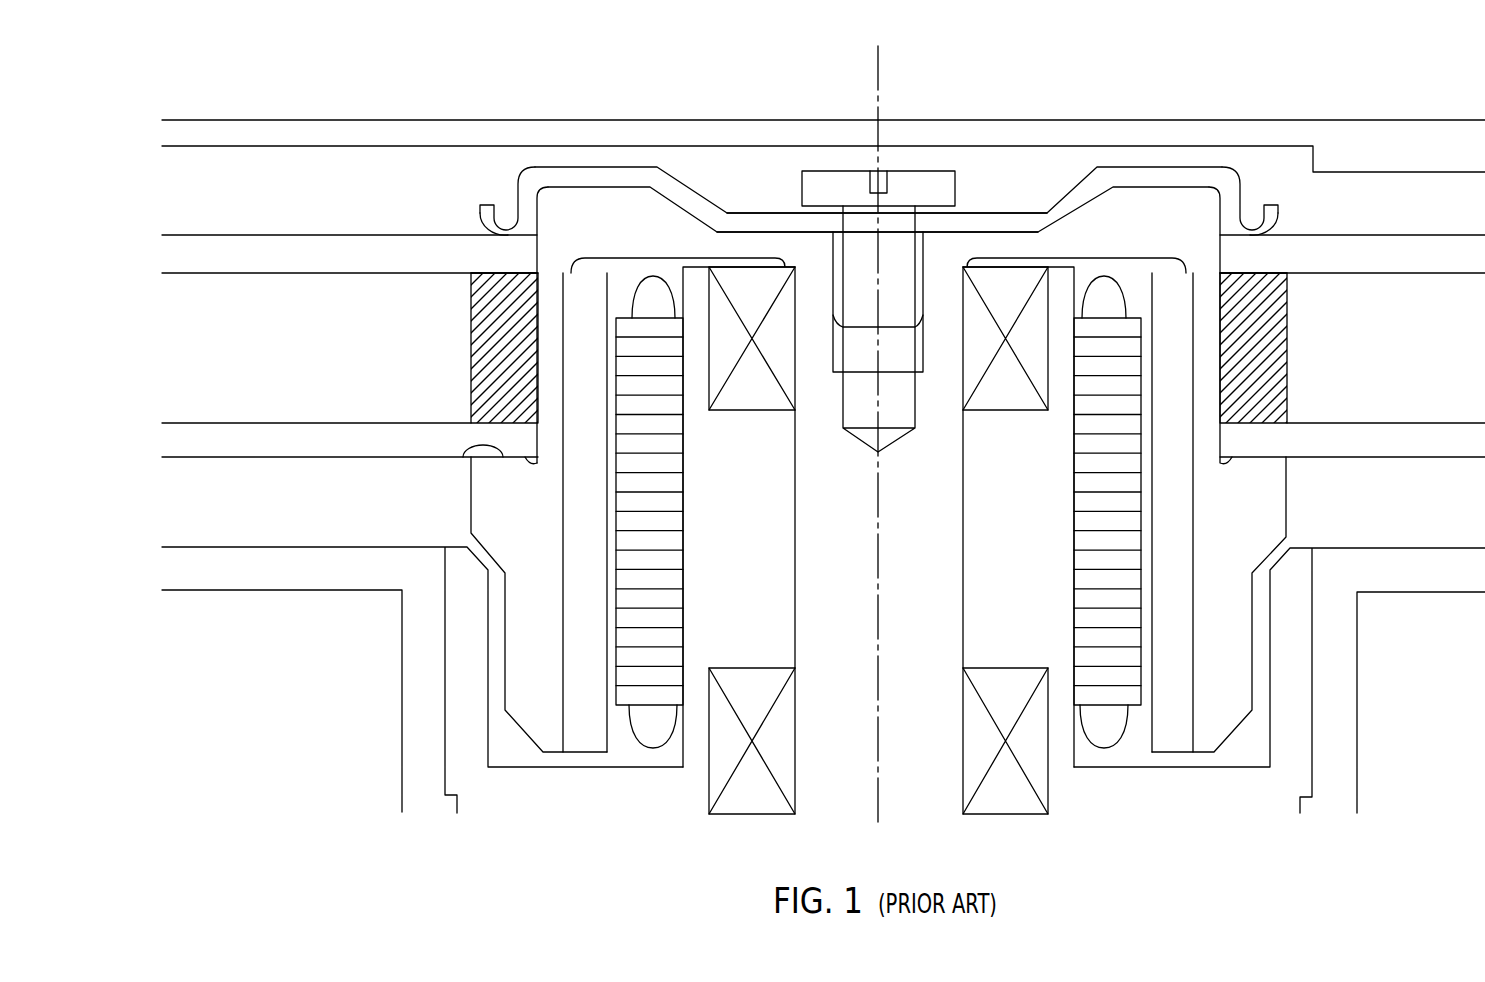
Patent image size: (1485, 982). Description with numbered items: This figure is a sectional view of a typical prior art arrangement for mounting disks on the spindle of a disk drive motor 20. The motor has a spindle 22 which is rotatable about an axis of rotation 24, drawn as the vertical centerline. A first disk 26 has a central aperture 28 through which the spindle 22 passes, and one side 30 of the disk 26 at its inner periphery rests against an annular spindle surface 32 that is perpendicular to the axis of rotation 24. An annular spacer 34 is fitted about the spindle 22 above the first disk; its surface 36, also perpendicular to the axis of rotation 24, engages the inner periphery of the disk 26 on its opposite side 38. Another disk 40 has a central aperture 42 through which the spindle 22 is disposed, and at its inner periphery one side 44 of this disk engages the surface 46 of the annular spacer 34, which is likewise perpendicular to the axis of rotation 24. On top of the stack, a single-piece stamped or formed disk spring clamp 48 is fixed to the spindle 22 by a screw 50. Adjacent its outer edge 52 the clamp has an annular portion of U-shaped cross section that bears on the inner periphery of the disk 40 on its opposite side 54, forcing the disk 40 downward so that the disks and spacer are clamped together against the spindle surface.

The disk drive motor 20 is at (978, 246).
The spindle 22 is at (633, 208).
The axis of rotation 24 is at (880, 67).
The first disk 26 is at (209, 452).
The central aperture 28 is at (539, 456).
The one side of the disk 30 is at (490, 458).
The annular spindle surface 32 is at (465, 458).
The annular spacer 34 is at (482, 334).
The surface of the annular spacer 36 is at (483, 424).
The opposite side of the disk 38 is at (504, 426).
The disk 40 is at (214, 263).
The central aperture 42 is at (538, 250).
The one side of the disk 44 is at (478, 280).
The surface of the annular spacer 46 is at (510, 272).
The disk spring clamp 48 is at (735, 220).
The screw 50 is at (932, 182).
The outer edge 52 is at (508, 227).
The opposite side of the disk 54 is at (494, 223).